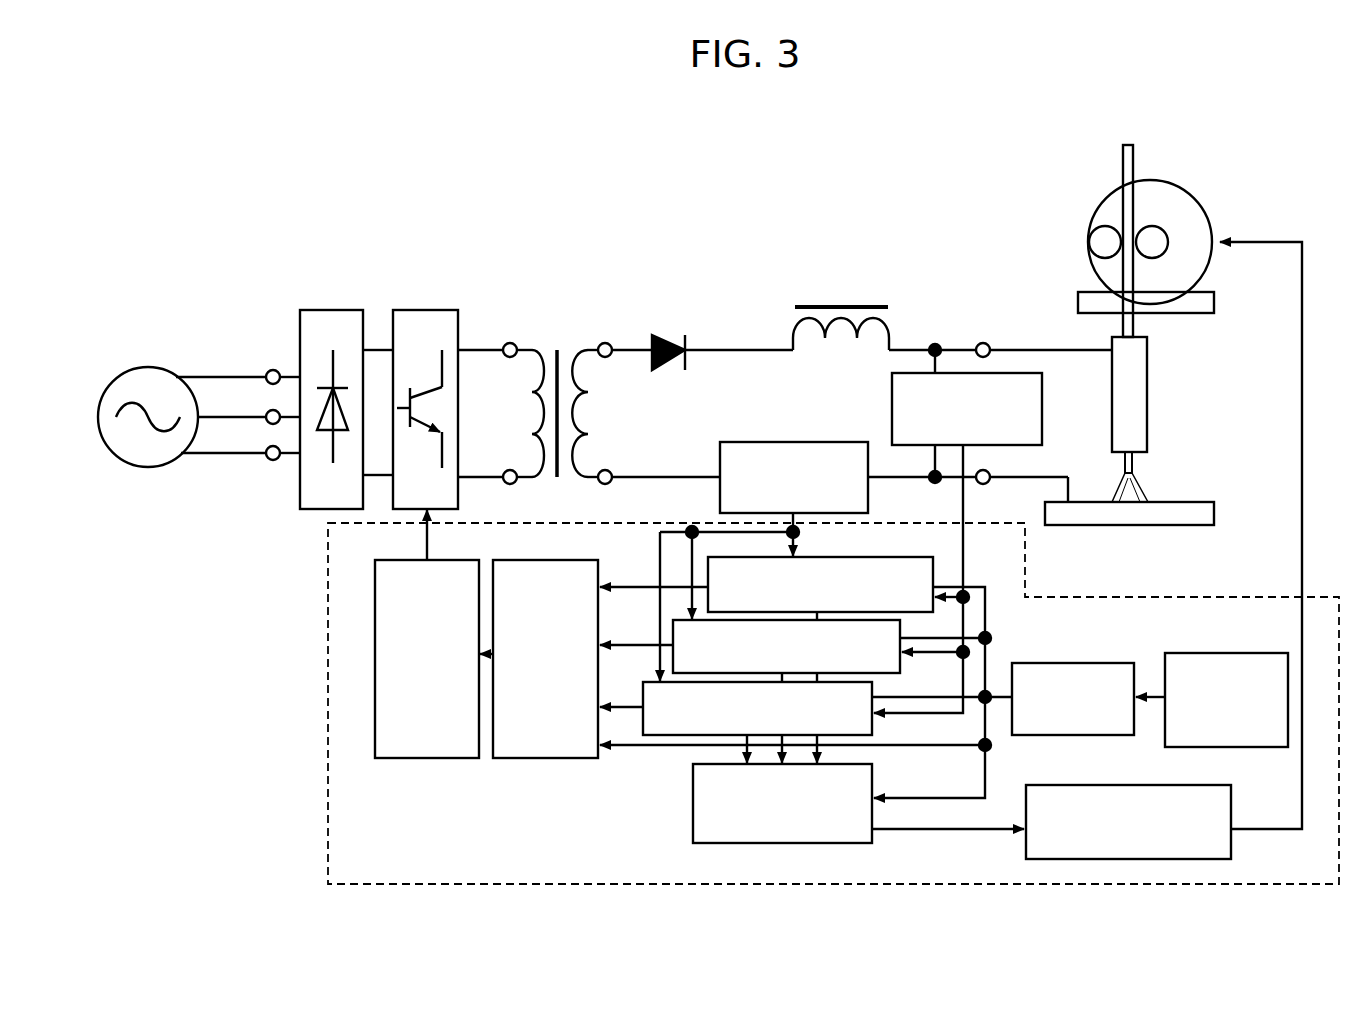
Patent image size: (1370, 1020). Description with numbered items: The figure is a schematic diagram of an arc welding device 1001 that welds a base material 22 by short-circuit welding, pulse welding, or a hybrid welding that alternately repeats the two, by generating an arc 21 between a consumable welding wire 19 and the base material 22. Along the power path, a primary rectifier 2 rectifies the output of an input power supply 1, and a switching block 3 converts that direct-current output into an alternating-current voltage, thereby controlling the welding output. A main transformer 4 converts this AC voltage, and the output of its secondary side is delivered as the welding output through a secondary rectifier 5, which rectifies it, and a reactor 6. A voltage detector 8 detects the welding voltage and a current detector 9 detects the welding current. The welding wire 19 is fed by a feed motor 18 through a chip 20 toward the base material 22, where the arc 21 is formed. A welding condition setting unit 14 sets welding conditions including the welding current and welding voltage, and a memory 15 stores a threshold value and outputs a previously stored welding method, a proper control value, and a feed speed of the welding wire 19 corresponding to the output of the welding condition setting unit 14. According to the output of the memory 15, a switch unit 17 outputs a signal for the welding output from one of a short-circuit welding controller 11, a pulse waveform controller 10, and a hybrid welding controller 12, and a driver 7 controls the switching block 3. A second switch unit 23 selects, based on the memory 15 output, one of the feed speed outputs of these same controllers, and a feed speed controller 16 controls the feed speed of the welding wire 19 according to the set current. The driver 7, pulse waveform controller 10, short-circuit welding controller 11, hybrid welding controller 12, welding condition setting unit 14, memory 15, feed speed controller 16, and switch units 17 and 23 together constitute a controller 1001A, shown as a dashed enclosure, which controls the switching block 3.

The input power supply 1 is at (146, 366).
The primary rectifier 2 is at (337, 310).
The switching block 3 is at (438, 310).
The main transformer 4 is at (568, 335).
The secondary rectifier 5 is at (673, 335).
The reactor 6 is at (847, 303).
The driver 7 is at (463, 758).
The voltage detector 8 is at (1040, 397).
The current detector 9 is at (803, 442).
The pulse waveform controller 10 is at (935, 571).
The short-circuit welding controller 11 is at (670, 658).
The hybrid welding controller 12 is at (643, 718).
The welding condition setting unit 14 is at (1260, 653).
The memory 15 is at (1108, 662).
The feed speed controller 16 is at (1100, 785).
The switch unit 17 is at (572, 758).
The feed motor 18 is at (1192, 223).
The welding wire 19 is at (1123, 172).
The chip 20 is at (1148, 427).
The arc 21 is at (1142, 486).
The base material 22 is at (1160, 527).
The switch unit 23 is at (690, 837).
The arc welding device 1001 is at (1239, 165).
The controller 1001A is at (328, 594).